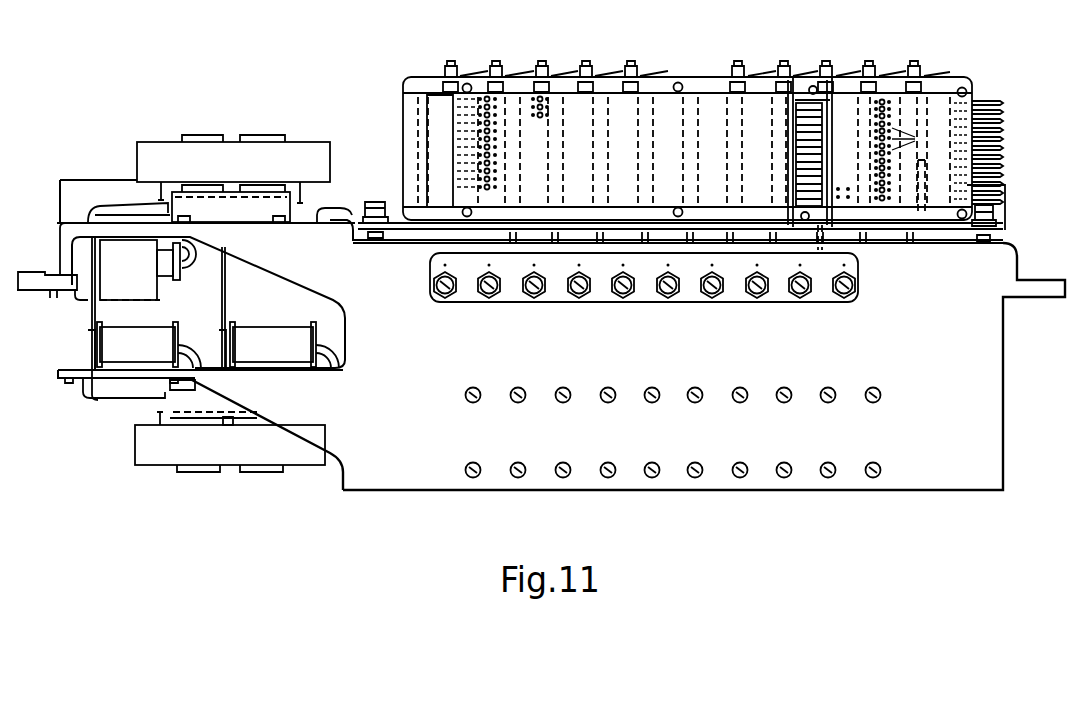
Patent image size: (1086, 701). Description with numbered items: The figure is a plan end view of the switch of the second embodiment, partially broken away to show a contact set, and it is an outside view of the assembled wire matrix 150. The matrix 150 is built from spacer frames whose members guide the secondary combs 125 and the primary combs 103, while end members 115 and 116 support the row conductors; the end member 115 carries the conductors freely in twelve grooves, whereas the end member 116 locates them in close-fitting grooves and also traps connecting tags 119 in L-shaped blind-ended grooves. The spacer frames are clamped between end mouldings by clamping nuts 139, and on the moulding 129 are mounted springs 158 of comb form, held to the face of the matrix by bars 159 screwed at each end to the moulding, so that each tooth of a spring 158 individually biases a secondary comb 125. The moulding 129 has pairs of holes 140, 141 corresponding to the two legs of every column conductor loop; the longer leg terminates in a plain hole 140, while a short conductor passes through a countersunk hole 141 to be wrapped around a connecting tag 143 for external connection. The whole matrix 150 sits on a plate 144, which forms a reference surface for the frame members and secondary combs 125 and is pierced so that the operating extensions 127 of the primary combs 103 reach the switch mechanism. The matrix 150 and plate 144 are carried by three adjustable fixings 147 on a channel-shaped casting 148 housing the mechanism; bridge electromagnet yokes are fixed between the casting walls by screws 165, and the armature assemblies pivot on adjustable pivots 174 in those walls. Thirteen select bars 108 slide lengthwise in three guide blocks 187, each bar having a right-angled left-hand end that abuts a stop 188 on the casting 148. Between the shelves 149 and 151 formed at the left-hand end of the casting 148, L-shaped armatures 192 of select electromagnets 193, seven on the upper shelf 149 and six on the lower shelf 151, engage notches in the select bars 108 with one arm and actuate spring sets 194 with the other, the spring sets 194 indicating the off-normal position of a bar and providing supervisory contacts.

The primary comb 103 is at (826, 108).
The select bar 108 is at (302, 302).
The end member 115 is at (420, 140).
The end member 116 is at (921, 214).
The connecting tag 119 is at (1001, 131).
The secondary comb 125 is at (787, 208).
The operating extension 127 is at (862, 240).
The moulding 129 is at (402, 105).
The clamping nut 139 is at (679, 82).
The hole 140 is at (876, 165).
The hole 141 is at (883, 100).
The connecting tag 143 is at (915, 139).
The plate 144 is at (990, 233).
The adjustable fixing 147 is at (380, 200).
The casting 148 is at (1003, 393).
The shelf 149 is at (153, 228).
The matrix 150 is at (972, 74).
The shelf 151 is at (140, 377).
The spring 158 is at (563, 72).
The bar 159 is at (487, 72).
The screw 165 is at (478, 402).
The adjustable pivot 174 is at (832, 298).
The guide block 187 is at (158, 298).
The stop 188 is at (47, 290).
The armature 192 is at (117, 200).
The select electromagnet 193 is at (157, 337).
The spring set 194 is at (160, 150).